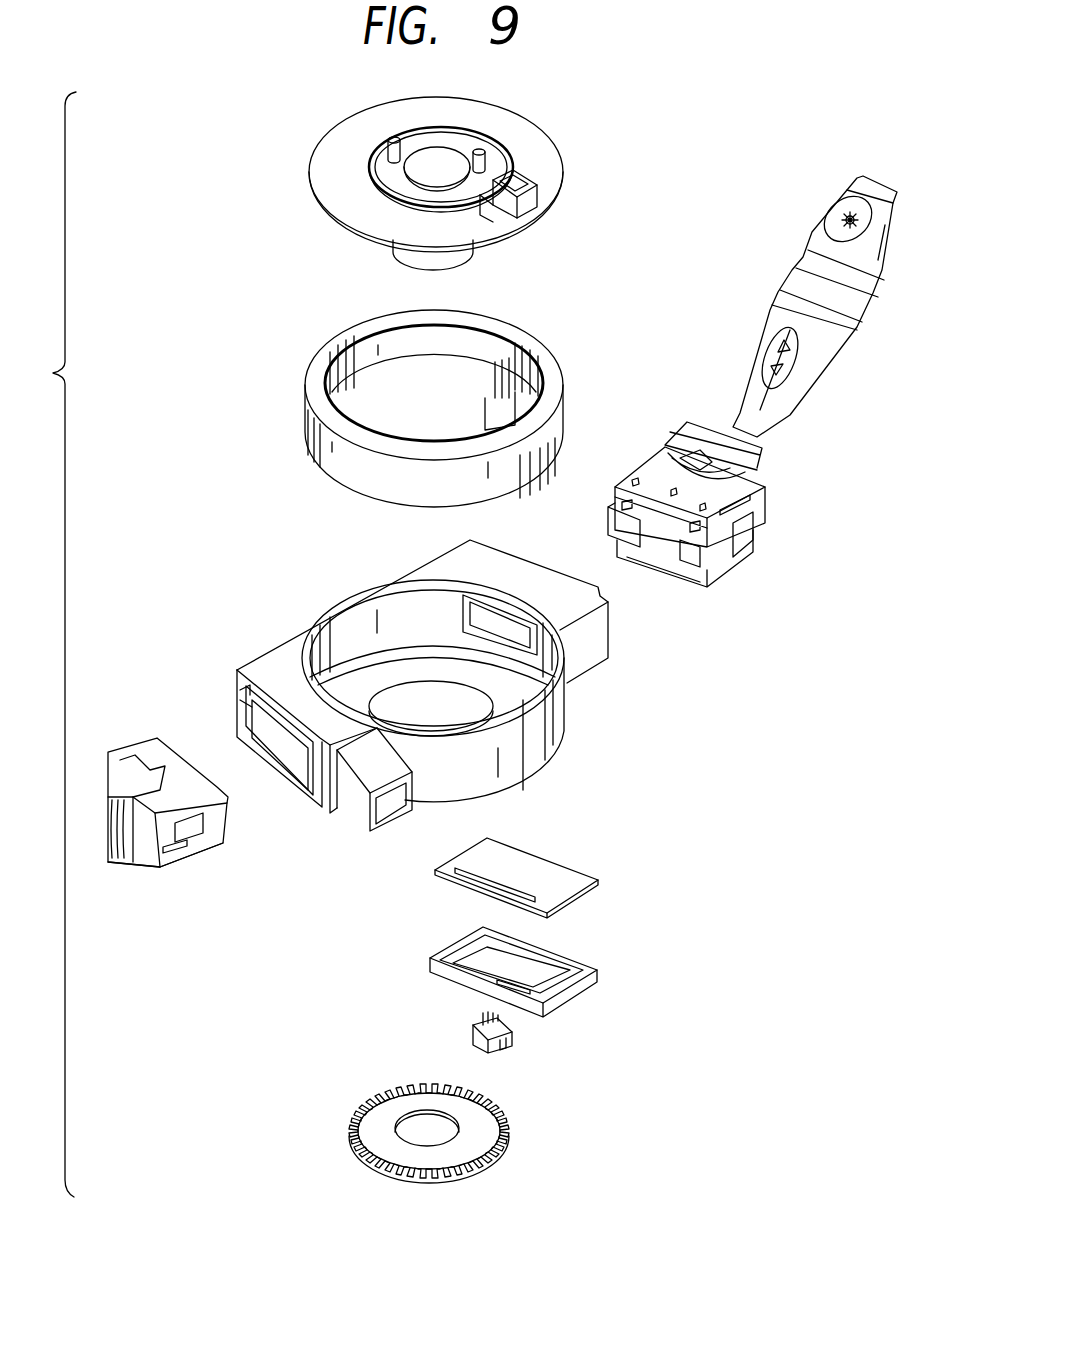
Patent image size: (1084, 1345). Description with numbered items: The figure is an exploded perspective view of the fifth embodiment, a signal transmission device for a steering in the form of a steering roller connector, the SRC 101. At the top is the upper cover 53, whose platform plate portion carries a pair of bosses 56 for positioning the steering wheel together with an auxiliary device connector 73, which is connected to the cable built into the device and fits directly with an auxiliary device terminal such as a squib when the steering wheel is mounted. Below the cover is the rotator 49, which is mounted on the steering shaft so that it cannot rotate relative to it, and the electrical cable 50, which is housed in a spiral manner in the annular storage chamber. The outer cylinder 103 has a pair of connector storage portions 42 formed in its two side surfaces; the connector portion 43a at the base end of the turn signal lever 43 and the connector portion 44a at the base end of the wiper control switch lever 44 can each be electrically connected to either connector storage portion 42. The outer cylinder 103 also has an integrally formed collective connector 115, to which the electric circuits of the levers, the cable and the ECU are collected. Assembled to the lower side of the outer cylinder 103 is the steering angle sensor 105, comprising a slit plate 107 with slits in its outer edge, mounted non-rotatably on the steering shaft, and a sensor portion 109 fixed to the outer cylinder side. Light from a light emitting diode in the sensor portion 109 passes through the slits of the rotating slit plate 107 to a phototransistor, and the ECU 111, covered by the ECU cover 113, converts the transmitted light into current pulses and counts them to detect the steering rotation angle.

The SRC 101 is at (590, 250).
The upper cover 53 is at (548, 133).
The bosses 56 is at (474, 166).
The auxiliary device connector 73 is at (527, 172).
The rotator 49 is at (393, 257).
The electrical cable 50 is at (530, 345).
The turn signal lever 43 is at (810, 228).
The connector portion 43a is at (655, 468).
The connector storage portions 42 is at (297, 752).
The outer cylinder 103 is at (548, 760).
The collective connector 115 is at (397, 817).
The connector portion 44a is at (172, 752).
The wiper control switch lever 44 is at (148, 868).
The ECU 111 is at (595, 878).
The steering angle sensor 105 is at (645, 952).
The ECU cover 113 is at (597, 975).
The sensor portion 109 is at (503, 1045).
The slit plate 107 is at (507, 1118).